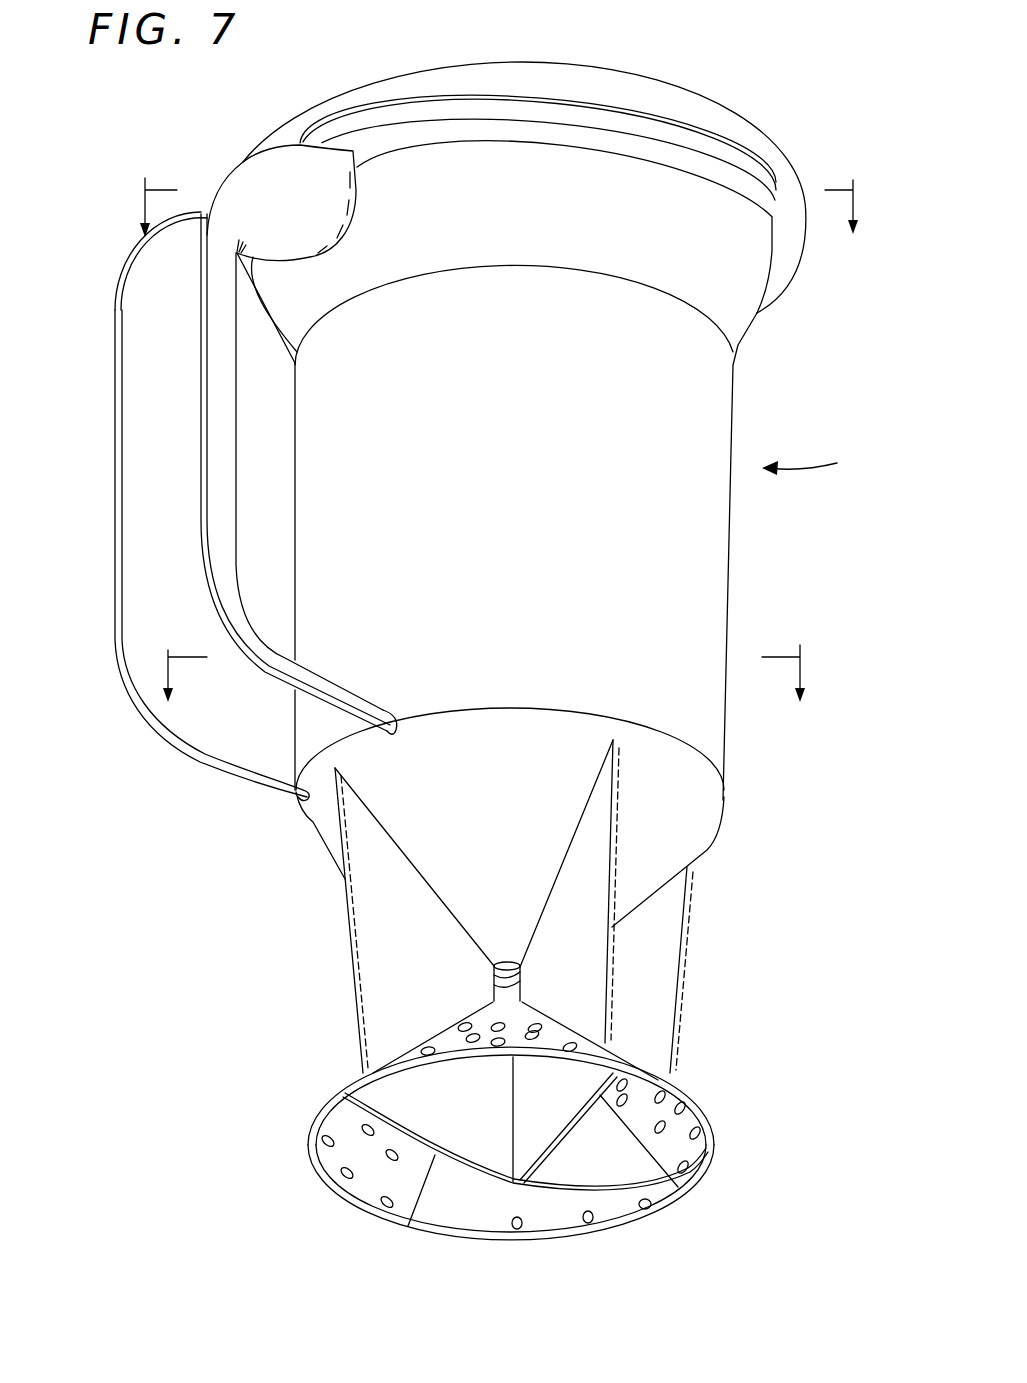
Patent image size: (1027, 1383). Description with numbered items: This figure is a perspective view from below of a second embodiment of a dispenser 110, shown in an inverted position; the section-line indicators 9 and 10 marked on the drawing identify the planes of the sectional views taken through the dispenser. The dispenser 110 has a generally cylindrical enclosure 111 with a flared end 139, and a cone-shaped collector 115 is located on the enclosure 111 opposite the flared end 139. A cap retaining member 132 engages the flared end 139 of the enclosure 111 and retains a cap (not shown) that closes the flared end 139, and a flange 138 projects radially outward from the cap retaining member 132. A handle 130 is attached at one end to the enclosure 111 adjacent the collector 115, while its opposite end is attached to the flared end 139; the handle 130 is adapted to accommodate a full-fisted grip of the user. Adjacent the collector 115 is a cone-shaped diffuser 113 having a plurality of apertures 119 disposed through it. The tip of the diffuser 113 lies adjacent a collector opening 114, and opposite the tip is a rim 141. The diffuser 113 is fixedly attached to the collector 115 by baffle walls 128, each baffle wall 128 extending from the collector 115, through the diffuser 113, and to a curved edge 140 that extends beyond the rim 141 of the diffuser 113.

The section line 9- 9 is at (492, 187).
The section line 10- 10 is at (482, 652).
The dispenser 110 is at (832, 469).
The enclosure 111 is at (522, 565).
The diffuser 113 is at (705, 1113).
The collector opening 114 is at (498, 963).
The collector 115 is at (675, 835).
The apertures 119 is at (328, 1142).
The baffle wall 128 is at (681, 971).
The handle 130 is at (114, 612).
The cap retaining member 132 is at (390, 78).
The flange 138 is at (612, 108).
The flared end 139 is at (545, 190).
The curved edge 140 is at (620, 1207).
The rim 141 is at (712, 1143).